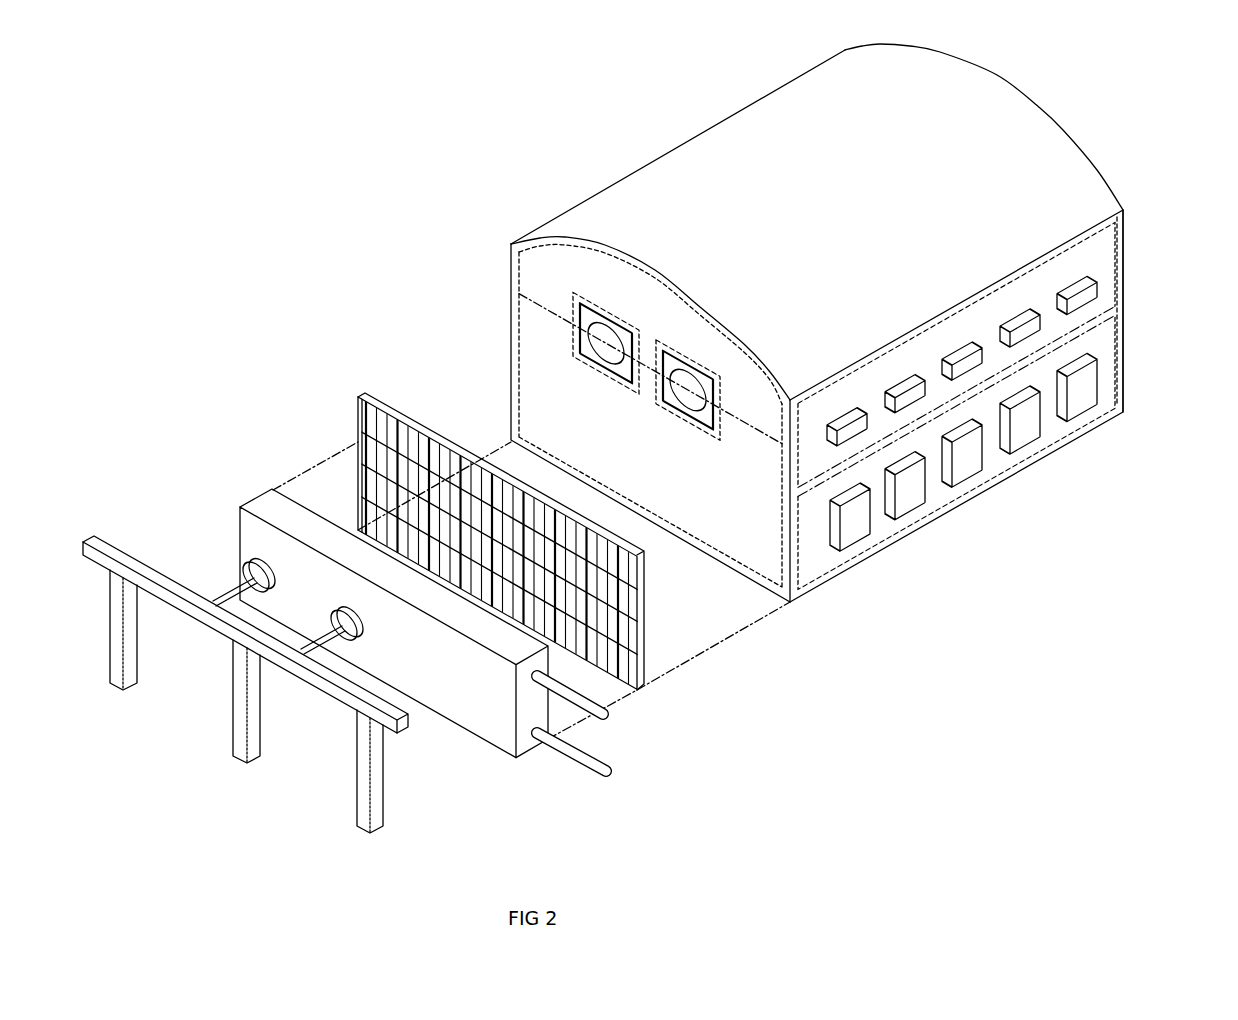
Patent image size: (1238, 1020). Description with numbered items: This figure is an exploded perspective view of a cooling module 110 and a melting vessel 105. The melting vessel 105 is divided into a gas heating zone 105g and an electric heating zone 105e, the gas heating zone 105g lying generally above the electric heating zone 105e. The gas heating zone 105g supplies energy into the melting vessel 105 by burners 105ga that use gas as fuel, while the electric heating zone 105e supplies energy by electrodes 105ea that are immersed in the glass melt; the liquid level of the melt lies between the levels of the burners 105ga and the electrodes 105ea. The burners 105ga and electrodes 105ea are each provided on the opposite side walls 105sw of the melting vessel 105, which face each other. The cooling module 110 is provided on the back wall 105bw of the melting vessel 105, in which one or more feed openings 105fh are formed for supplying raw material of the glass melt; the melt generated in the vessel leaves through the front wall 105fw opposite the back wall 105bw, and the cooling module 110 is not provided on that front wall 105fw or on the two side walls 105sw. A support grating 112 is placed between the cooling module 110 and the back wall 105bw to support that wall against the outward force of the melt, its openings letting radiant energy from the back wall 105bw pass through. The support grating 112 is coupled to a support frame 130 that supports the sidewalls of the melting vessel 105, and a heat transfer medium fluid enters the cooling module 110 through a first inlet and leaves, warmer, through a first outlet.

The melting vessel 105 is at (1018, 81).
The feed opening 105fh is at (618, 322).
The back wall 105bw is at (569, 279).
The gas heating zone 105g is at (512, 260).
The electric heating zone 105e is at (512, 352).
The burner 105ga is at (1093, 298).
The electrode 105ea is at (1092, 397).
The side wall 105sw is at (1073, 268).
The front wall 105fw is at (1127, 220).
The support grating 112 is at (384, 406).
The cooling module 110 is at (247, 484).
The support frame 130 is at (112, 531).